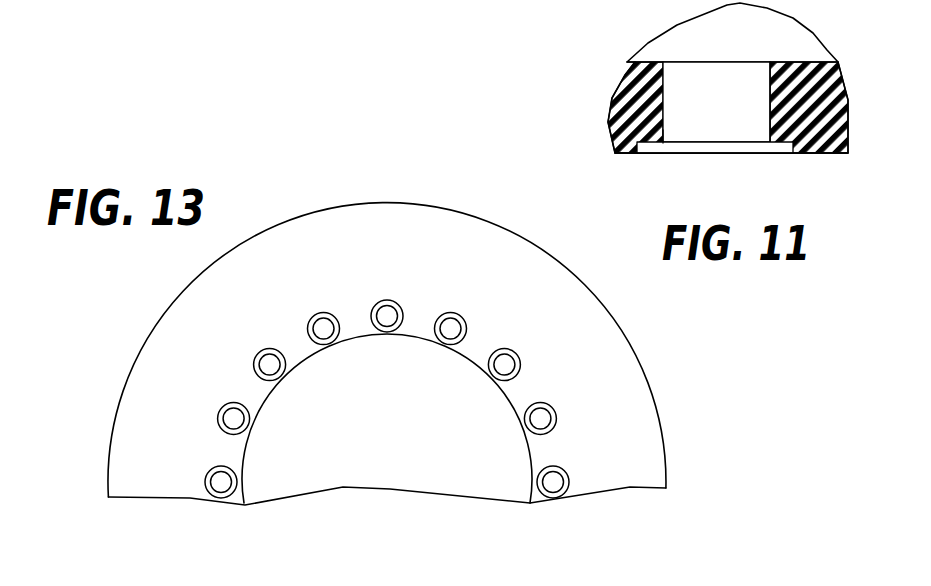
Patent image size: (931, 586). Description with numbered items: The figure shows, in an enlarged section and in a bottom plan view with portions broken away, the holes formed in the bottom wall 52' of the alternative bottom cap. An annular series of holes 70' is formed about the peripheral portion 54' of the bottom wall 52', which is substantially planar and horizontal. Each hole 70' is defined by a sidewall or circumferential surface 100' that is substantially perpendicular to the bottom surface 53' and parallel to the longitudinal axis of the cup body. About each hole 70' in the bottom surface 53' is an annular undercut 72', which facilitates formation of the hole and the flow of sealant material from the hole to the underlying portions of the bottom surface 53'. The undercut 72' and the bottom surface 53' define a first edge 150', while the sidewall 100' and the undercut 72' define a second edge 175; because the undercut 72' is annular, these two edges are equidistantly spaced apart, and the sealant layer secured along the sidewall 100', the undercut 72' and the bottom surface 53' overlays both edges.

In FIG. 11, the bottom wall 52' is at (611, 107).
In FIG. 13, the bottom wall 52' is at (387, 418).
In FIG. 11, the bottom surface 53' is at (710, 177).
In FIG. 13, the bottom surface 53' is at (387, 511).
In FIG. 13, the peripheral portion 54' is at (369, 350).
In FIG. 11, the hole 70' is at (740, 88).
In FIG. 13, the hole 70' is at (396, 399).
In FIG. 11, the annular undercut 72' is at (809, 127).
In FIG. 13, the annular undercut 72' is at (613, 415).
In FIG. 11, the sidewall 100' is at (716, 102).
In FIG. 11, the first edge 150' is at (715, 178).
In FIG. 11, the second edge 175 is at (663, 143).